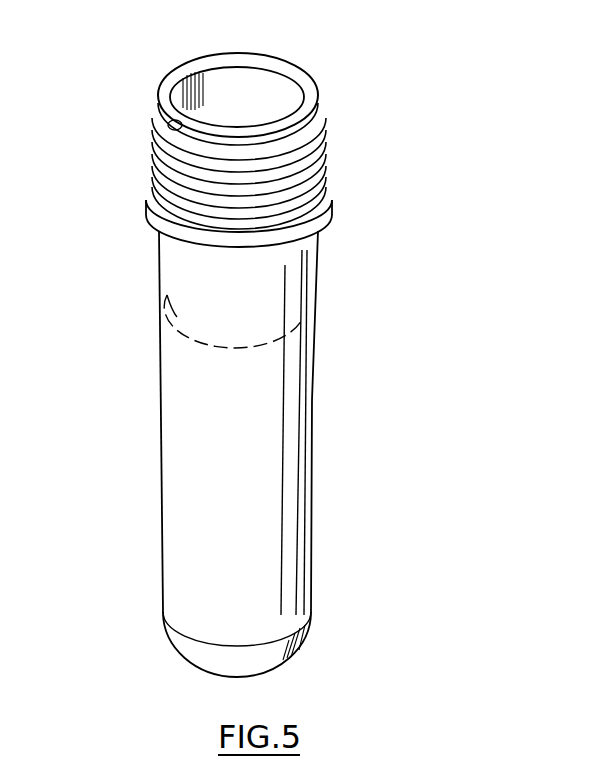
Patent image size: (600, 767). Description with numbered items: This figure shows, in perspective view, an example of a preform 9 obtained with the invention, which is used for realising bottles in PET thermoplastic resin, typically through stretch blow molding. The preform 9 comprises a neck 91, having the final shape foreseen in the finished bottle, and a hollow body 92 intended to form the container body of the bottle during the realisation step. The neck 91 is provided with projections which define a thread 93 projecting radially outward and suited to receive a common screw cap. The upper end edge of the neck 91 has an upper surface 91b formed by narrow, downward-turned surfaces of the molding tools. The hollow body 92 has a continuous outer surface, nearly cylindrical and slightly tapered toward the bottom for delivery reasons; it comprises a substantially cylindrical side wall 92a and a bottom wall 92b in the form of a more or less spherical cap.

The preform 9 is at (207, 367).
The neck 91 is at (180, 172).
The upper surface of the upper end edge of the neck 91b is at (184, 70).
The hollow body 92 is at (204, 477).
The side wall 92a is at (188, 305).
The bottom wall 92b is at (258, 660).
The thread 93 is at (312, 175).